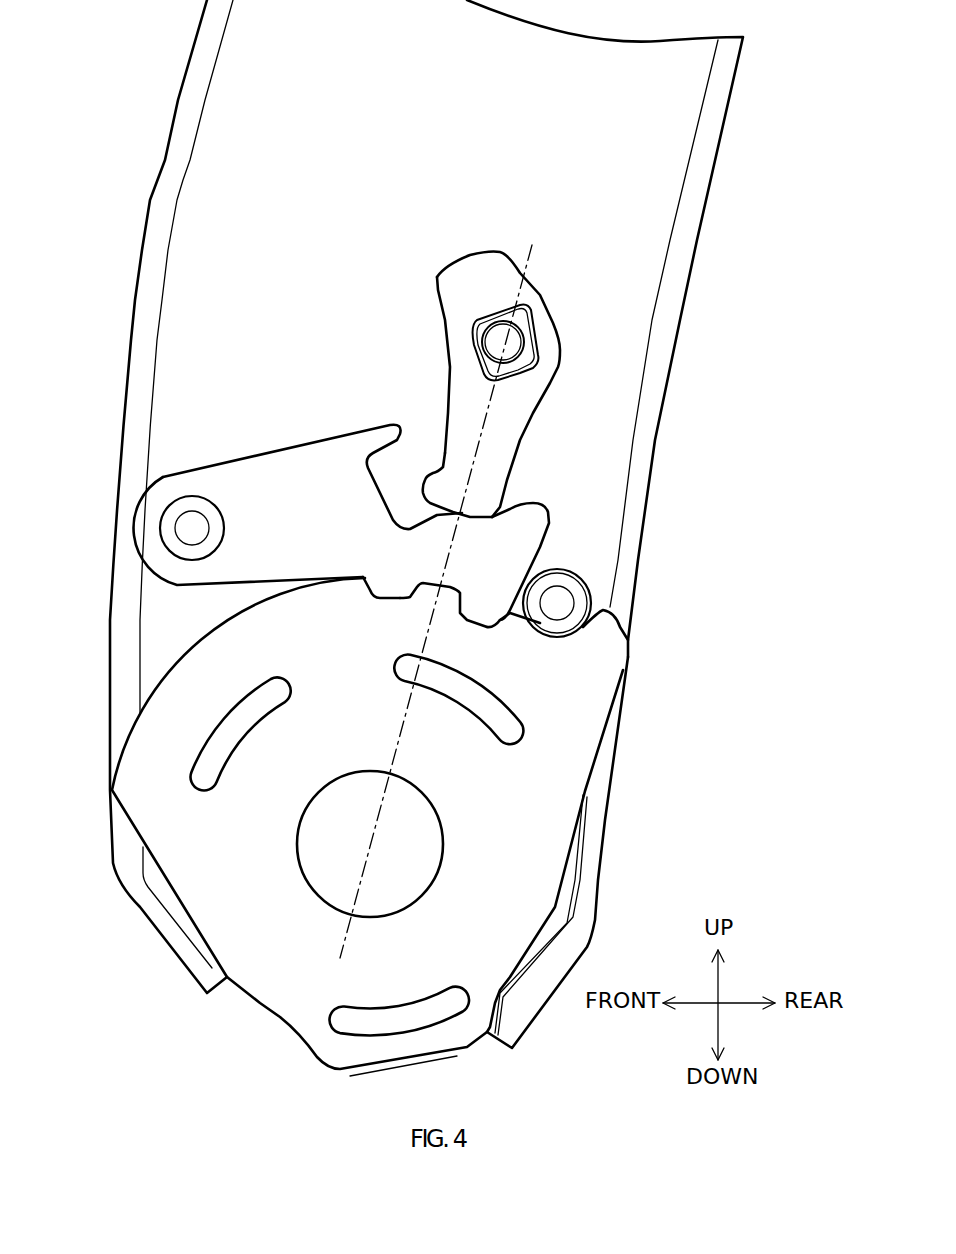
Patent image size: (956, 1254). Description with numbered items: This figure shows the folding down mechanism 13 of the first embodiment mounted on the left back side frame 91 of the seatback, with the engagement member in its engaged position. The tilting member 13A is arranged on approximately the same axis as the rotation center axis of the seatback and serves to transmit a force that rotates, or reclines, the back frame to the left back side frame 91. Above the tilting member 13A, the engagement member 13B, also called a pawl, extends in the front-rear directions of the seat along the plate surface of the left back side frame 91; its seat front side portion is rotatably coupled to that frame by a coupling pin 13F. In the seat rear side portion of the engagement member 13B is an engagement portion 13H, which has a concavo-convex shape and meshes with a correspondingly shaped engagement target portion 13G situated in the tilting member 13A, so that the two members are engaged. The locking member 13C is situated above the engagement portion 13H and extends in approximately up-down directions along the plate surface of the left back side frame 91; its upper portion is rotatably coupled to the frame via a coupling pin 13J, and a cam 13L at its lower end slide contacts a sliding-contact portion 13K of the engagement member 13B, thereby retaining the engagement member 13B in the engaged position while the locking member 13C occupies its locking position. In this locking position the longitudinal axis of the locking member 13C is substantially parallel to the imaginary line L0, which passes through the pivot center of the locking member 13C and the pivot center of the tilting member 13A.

The left back side frame 91 is at (702, 210).
The folding down mechanism 13 is at (300, 427).
The tilting member 13A is at (376, 783).
The engagement member 13B is at (246, 488).
The locking member 13C is at (590, 439).
The coupling pin 13F is at (167, 530).
The engagement target portion 13G is at (473, 628).
The engagement portion 13H is at (467, 580).
The coupling pin 13J is at (520, 318).
The sliding-contact portion 13K is at (545, 540).
The cam 13L is at (490, 493).
The imaginary line L0 is at (345, 938).